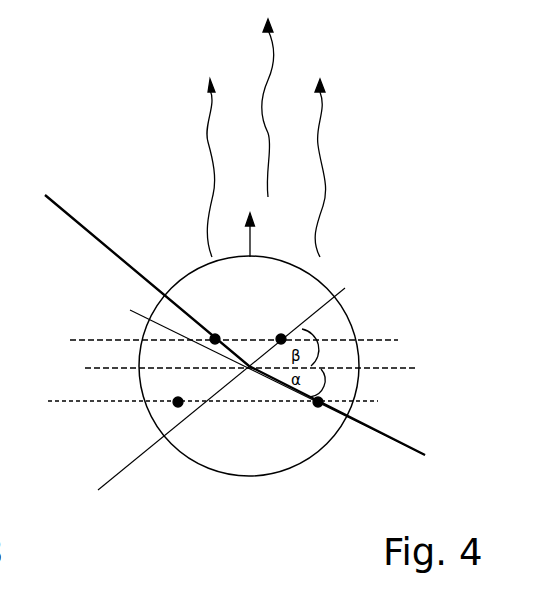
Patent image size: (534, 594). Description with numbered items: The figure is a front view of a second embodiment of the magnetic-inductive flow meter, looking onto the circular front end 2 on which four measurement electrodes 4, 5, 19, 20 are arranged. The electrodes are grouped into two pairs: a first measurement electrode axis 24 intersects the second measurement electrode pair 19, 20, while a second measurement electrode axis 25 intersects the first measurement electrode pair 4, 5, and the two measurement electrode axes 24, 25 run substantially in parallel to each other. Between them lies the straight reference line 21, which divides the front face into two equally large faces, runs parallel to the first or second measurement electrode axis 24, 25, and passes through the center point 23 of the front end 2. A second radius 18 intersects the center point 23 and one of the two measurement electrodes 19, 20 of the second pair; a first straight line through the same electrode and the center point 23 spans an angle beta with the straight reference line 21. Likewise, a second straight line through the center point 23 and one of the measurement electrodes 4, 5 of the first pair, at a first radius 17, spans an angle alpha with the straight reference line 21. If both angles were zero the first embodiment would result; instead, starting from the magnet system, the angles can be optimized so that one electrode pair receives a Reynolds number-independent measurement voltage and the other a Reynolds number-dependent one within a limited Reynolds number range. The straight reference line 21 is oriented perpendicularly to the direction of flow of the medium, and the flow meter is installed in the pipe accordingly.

The front end 2 is at (156, 306).
The measurement electrode 4 is at (326, 411).
The measurement electrode 5 is at (174, 404).
The first radius 17 is at (284, 372).
The second radius 18 is at (210, 262).
The measurement electrode 19 is at (282, 340).
The measurement electrode 20 is at (223, 313).
The straight reference line 21 is at (395, 367).
The center point 23 is at (247, 372).
The first measurement electrode axis 24 is at (92, 342).
The second measurement electrode axis 25 is at (72, 399).